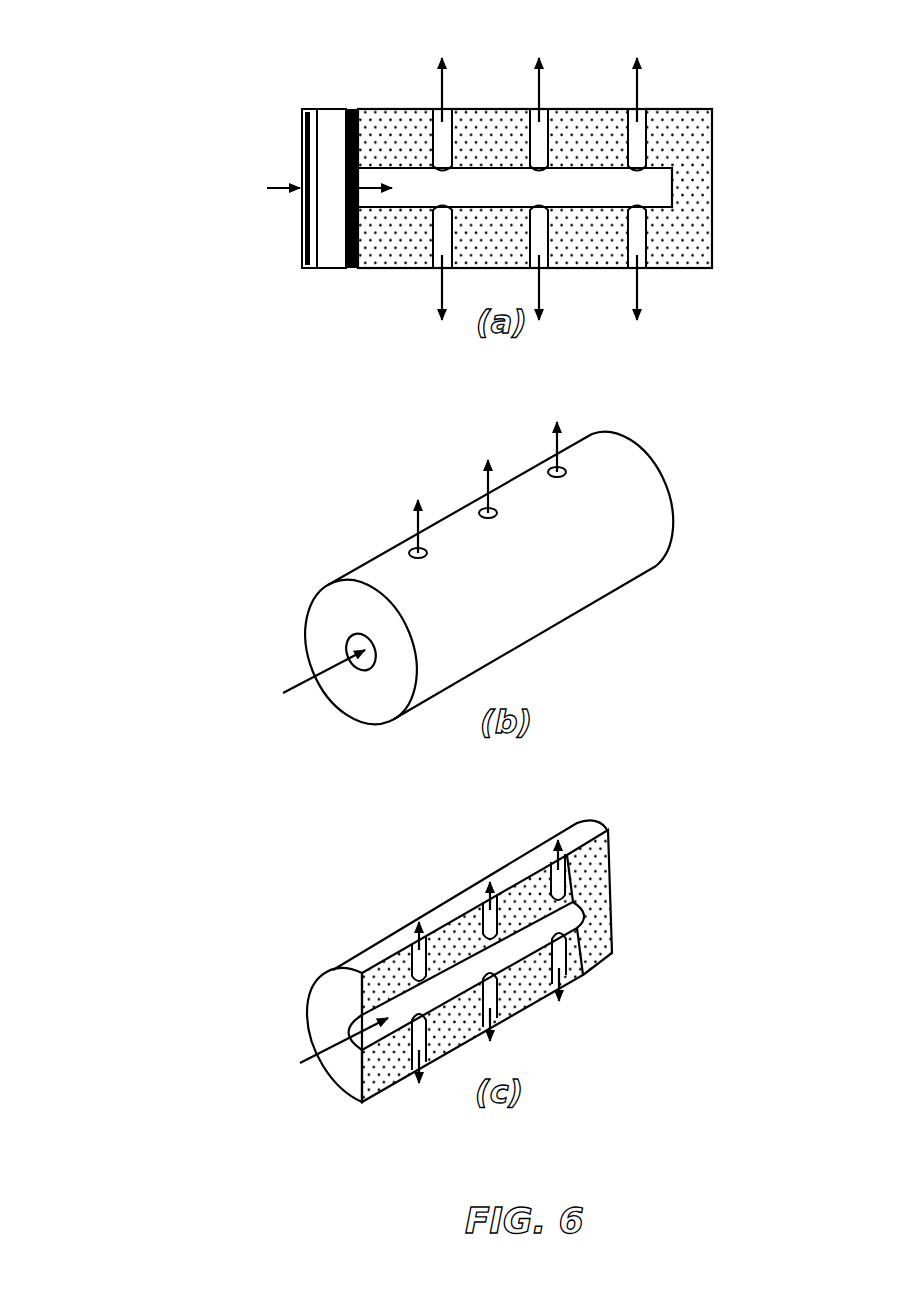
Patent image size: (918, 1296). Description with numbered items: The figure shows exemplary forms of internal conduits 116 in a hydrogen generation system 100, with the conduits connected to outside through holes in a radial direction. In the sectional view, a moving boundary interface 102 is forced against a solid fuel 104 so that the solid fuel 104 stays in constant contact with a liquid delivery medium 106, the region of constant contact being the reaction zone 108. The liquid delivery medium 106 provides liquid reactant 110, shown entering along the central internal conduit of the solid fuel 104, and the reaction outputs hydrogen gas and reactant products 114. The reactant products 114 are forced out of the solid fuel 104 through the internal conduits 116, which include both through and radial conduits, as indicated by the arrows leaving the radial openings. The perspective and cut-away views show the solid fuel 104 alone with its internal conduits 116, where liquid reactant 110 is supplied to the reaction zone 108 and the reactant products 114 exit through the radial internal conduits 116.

The hydrogen generation system 100 is at (118, 96).
The moving boundary interface 102 is at (305, 110).
The solid fuel 104 is at (675, 108).
The liquid delivery medium 106 is at (338, 110).
The reaction zone 108 is at (356, 110).
The liquid reactant 110 is at (298, 190).
The reactant products 114 is at (636, 72).
The internal conduits 116 is at (647, 135).